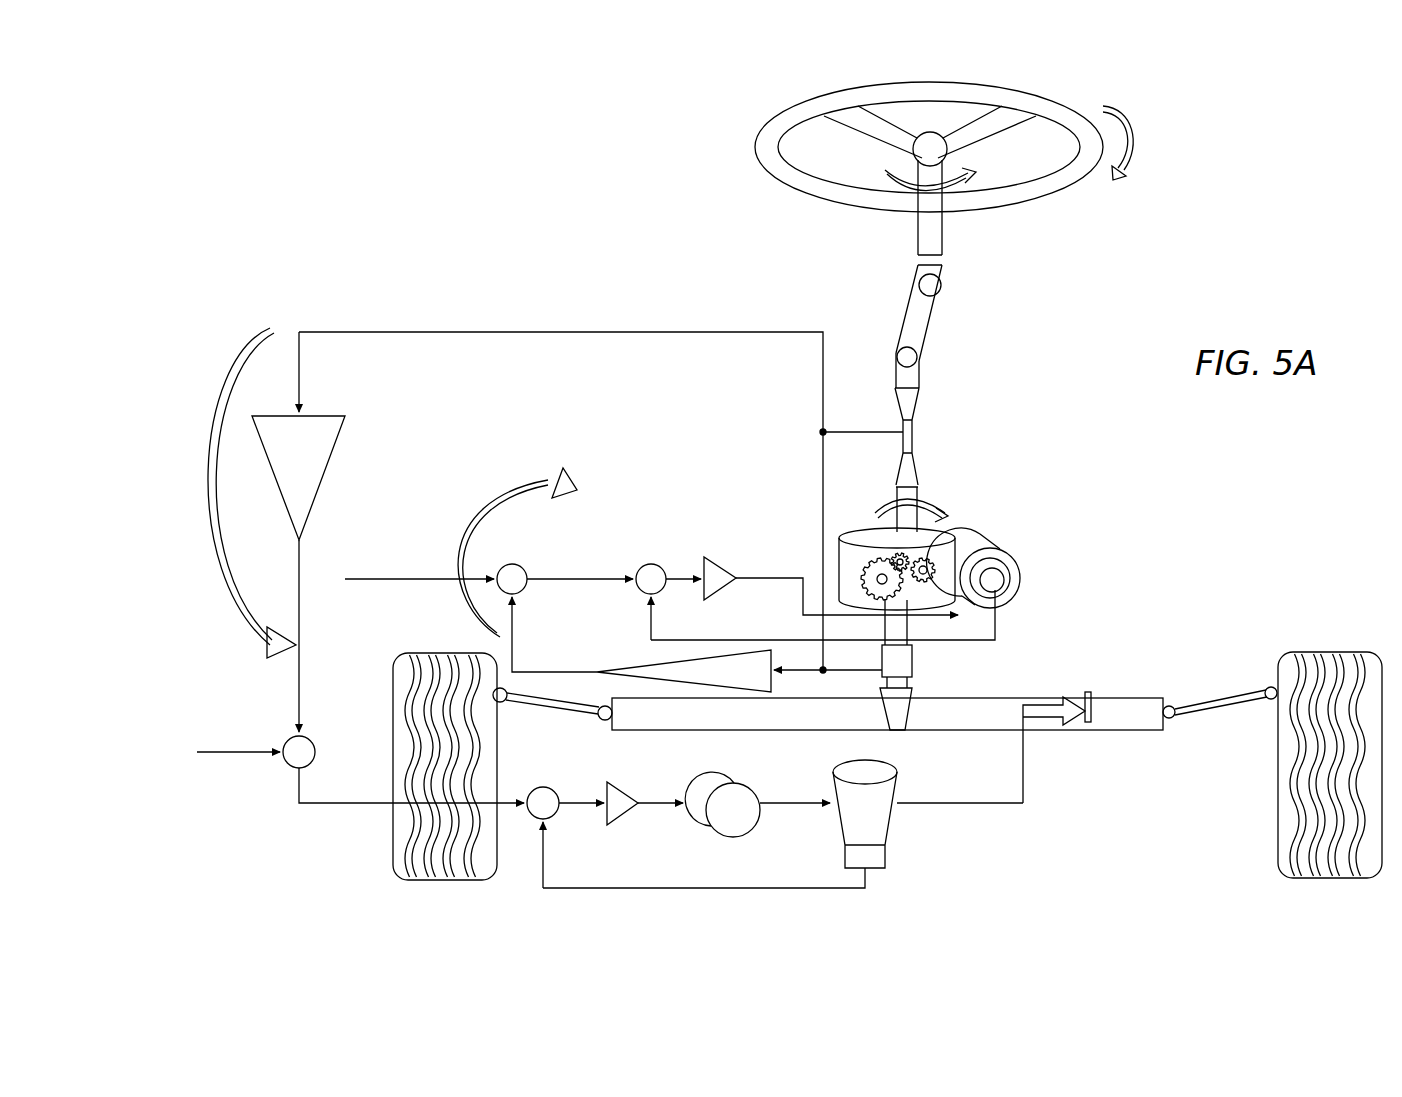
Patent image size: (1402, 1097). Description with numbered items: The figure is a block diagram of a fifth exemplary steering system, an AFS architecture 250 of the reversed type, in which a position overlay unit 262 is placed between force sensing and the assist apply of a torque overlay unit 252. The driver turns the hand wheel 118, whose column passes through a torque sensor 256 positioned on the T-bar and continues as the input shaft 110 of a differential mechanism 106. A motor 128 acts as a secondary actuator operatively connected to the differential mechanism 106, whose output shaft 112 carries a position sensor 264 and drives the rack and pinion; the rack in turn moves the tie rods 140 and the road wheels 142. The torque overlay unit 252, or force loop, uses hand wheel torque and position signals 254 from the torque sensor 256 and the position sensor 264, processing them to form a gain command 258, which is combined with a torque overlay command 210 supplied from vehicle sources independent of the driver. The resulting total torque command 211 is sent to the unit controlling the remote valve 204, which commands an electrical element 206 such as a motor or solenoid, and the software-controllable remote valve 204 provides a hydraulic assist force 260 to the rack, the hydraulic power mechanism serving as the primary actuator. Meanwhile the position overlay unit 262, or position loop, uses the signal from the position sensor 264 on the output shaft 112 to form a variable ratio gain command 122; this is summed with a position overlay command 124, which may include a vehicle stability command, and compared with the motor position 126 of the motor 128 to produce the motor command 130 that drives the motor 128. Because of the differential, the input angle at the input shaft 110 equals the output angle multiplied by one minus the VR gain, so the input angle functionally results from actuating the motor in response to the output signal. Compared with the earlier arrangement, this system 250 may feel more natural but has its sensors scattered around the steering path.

The hand wheel 118 is at (807, 98).
The AFS architecture 250 is at (622, 272).
The gain command 258 is at (325, 415).
The hand wheel torque and position signals 254 is at (775, 372).
The torque sensor 256 is at (912, 425).
The input shaft 110 is at (897, 520).
The differential mechanism 106 is at (932, 546).
The motor 128 is at (1008, 562).
The output shaft 112 is at (895, 627).
The position sensor 264 is at (900, 668).
The tie rods 140 is at (538, 702).
The road wheels 142 is at (393, 682).
The hydraulic assist force 260 is at (1105, 612).
The torque overlay unit 252 is at (192, 632).
The torque overlay command 210 is at (188, 797).
The total torque command 211 is at (316, 866).
The electrical element 206 is at (735, 822).
The remote valve 204 is at (862, 822).
The position overlay command 124 is at (428, 496).
The position overlay unit 262 is at (606, 460).
The motor command 130 is at (610, 547).
The motor position 126 is at (745, 626).
The variable ratio gain command 122 is at (645, 666).